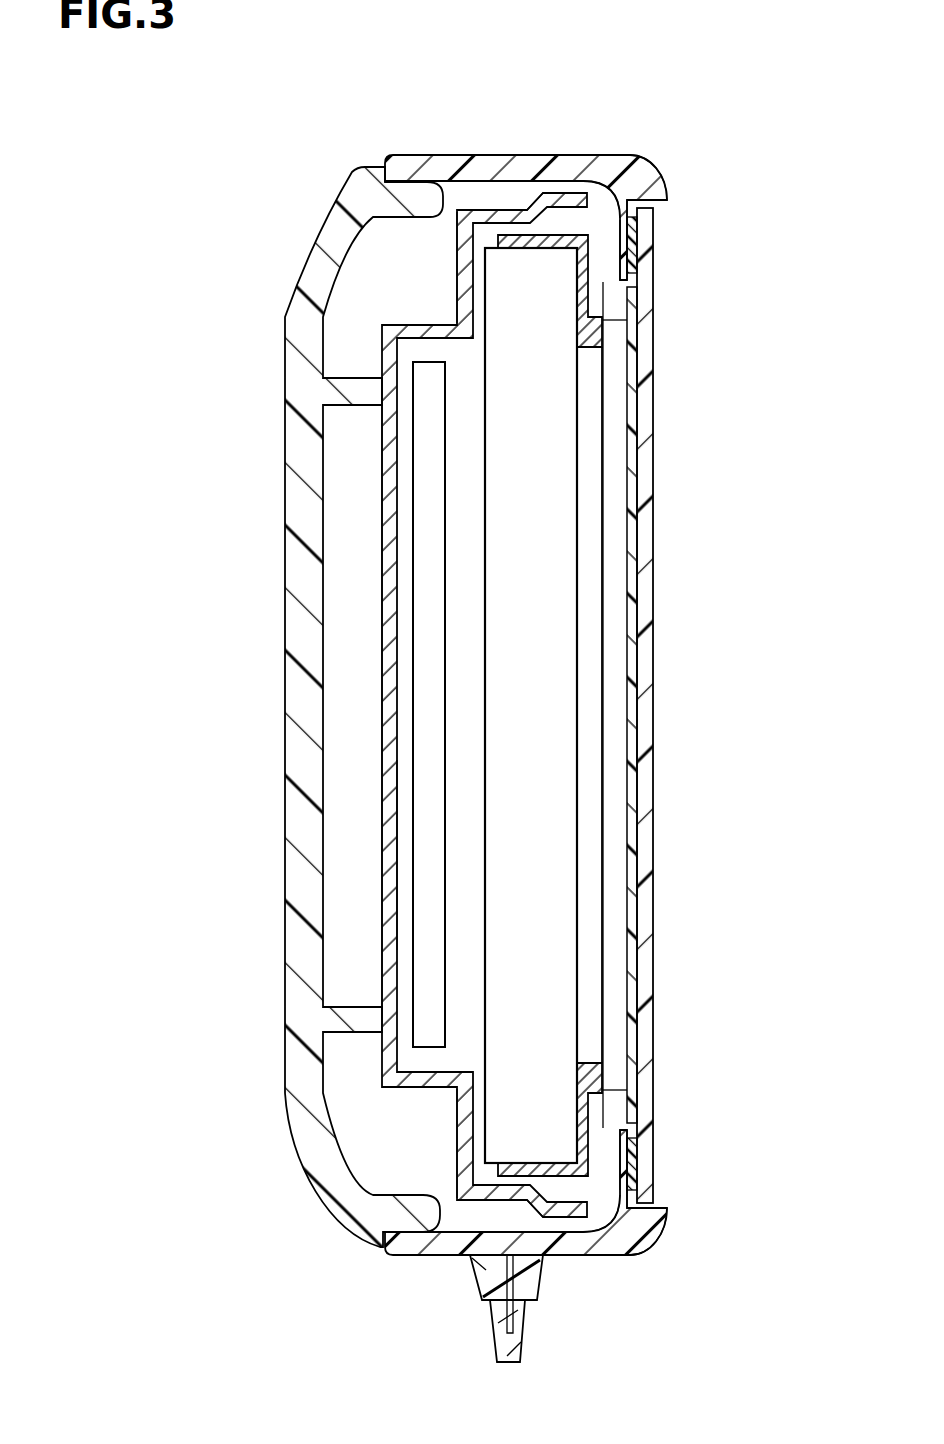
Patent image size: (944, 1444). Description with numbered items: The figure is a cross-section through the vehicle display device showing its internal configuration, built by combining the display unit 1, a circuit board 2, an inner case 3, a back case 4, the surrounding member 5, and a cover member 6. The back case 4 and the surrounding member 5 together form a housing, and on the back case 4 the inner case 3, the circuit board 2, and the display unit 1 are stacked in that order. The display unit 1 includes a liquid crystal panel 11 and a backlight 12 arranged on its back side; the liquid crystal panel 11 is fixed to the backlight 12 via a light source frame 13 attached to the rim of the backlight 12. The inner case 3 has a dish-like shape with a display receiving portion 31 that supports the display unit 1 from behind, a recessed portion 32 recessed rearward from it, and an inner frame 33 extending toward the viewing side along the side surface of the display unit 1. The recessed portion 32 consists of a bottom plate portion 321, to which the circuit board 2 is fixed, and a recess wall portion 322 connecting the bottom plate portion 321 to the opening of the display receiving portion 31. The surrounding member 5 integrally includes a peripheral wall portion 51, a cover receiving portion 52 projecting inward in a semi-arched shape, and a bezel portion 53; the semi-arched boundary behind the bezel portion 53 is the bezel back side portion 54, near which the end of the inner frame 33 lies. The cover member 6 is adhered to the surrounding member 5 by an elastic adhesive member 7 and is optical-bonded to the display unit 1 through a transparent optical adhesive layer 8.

The display unit 1 is at (481, 705).
The circuit board 2 is at (428, 637).
The inner case 3 is at (372, 737).
The back case 4 is at (305, 918).
The surrounding member 5 is at (428, 160).
The cover member 6 is at (650, 368).
The elastic adhesive member 7 is at (638, 263).
The optical adhesive layer 8 is at (632, 697).
The liquid crystal panel 11 is at (590, 463).
The backlight 12 is at (515, 545).
The light source frame 13 is at (588, 301).
The display receiving portion 31 is at (455, 285).
The recessed portion 32 is at (372, 809).
The inner frame 33 is at (495, 212).
The peripheral wall portion 51 is at (456, 166).
The cover receiving portion 52 is at (624, 230).
The bezel portion 53 is at (668, 184).
The bezel back side portion 54 is at (608, 190).
The bottom plate portion 321 is at (390, 851).
The recess wall portion 322 is at (418, 326).